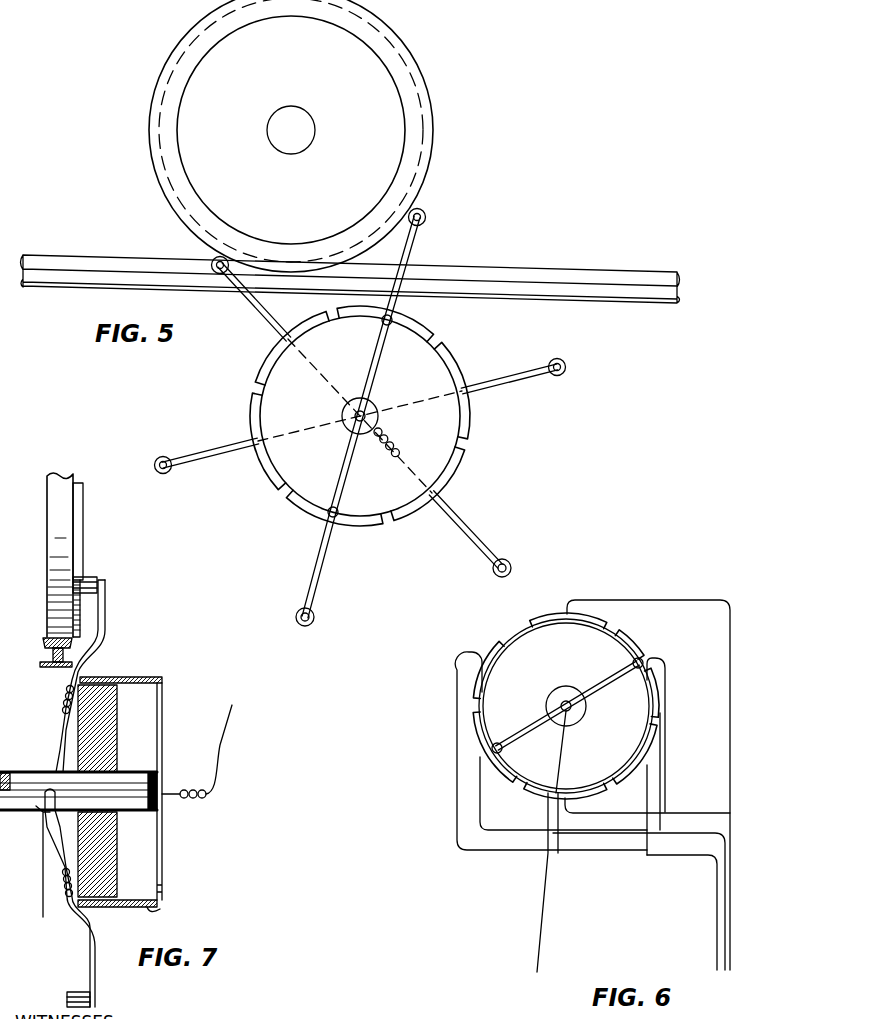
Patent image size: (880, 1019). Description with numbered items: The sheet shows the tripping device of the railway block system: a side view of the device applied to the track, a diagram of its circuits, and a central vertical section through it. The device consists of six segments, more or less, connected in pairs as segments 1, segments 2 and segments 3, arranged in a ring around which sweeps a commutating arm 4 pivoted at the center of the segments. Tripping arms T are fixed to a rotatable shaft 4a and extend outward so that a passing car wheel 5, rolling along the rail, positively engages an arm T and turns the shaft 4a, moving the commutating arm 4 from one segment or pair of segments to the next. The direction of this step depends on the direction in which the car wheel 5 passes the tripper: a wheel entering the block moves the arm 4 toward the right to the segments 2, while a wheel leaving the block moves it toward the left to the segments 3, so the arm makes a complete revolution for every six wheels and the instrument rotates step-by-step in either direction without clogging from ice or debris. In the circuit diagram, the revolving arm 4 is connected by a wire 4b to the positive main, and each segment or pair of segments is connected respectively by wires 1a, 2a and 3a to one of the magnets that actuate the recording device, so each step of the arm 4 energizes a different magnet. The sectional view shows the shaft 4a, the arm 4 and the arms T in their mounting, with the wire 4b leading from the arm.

In FIG. 5, the segments 1 is at (418, 323).
In FIG. 6, the segments 1 is at (543, 613).
In FIG. 7, the segments 1 is at (140, 677).
In FIG. 5, the segments 2 is at (475, 418).
In FIG. 6, the segments 2 is at (639, 655).
In FIG. 5, the segments 3 is at (452, 481).
In FIG. 6, the segments 3 is at (496, 643).
In FIG. 5, the commutating arm 4 is at (379, 387).
In FIG. 6, the commutating arm 4 is at (600, 689).
In FIG. 7, the commutating arm 4 is at (160, 741).
In FIG. 5, the rotatable shaft 4a is at (352, 410).
In FIG. 6, the rotatable shaft 4a is at (567, 698).
In FIG. 7, the rotatable shaft 4a is at (28, 770).
In FIG. 5, the wire 4b is at (392, 458).
In FIG. 6, the wire 4b is at (546, 907).
In FIG. 7, the wire 4b is at (222, 752).
In FIG. 5, the car wheel 5 is at (291, 136).
In FIG. 5, the tripping arms T is at (413, 247).
In FIG. 7, the tripping arms T is at (105, 616).
In FIG. 6, the wire 1a is at (731, 917).
In FIG. 7, the wire 1a is at (42, 901).
In FIG. 6, the wire 2a is at (715, 835).
In FIG. 6, the wire 3a is at (716, 917).